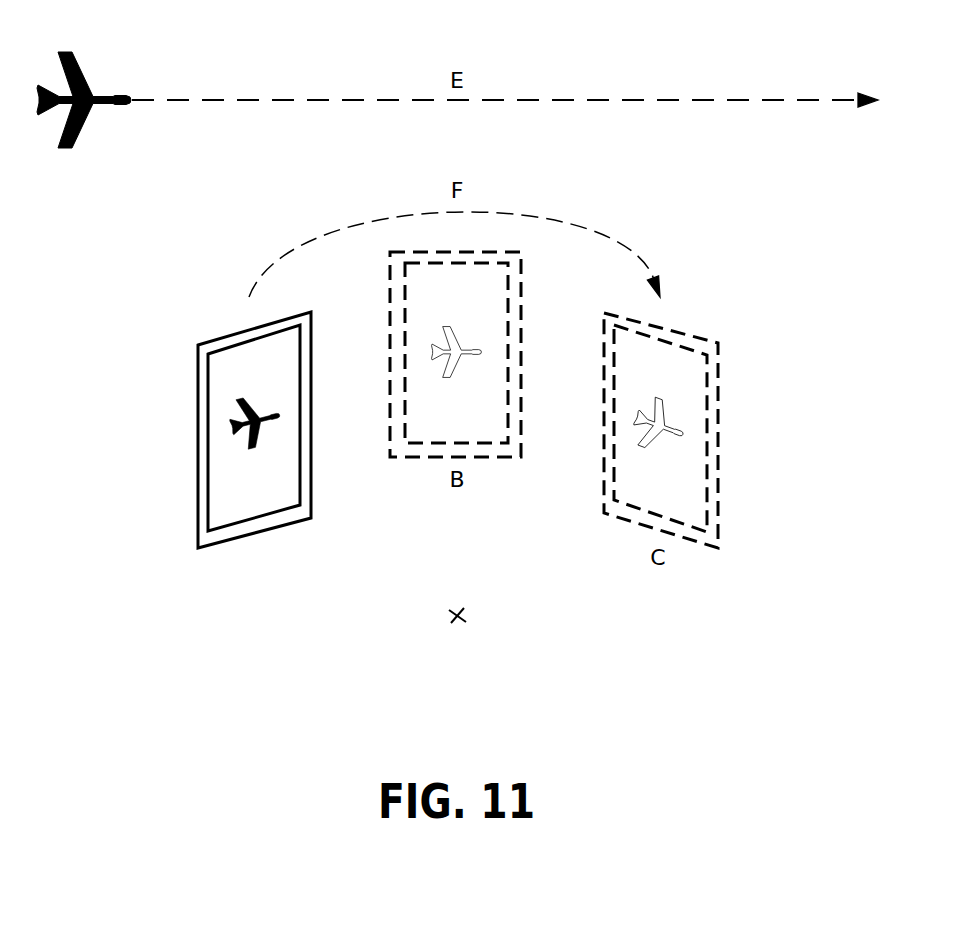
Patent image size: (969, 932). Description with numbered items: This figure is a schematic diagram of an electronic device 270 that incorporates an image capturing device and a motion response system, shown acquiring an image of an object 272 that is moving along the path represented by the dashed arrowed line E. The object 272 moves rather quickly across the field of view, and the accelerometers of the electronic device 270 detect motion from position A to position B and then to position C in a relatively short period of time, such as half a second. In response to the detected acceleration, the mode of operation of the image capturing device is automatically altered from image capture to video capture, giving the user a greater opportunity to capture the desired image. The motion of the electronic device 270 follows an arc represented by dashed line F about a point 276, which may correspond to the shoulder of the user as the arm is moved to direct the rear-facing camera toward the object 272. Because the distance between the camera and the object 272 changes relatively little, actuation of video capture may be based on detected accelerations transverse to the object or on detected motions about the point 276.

The electronic device 270 is at (213, 550).
The object 272 is at (82, 73).
The point 276 is at (458, 624).